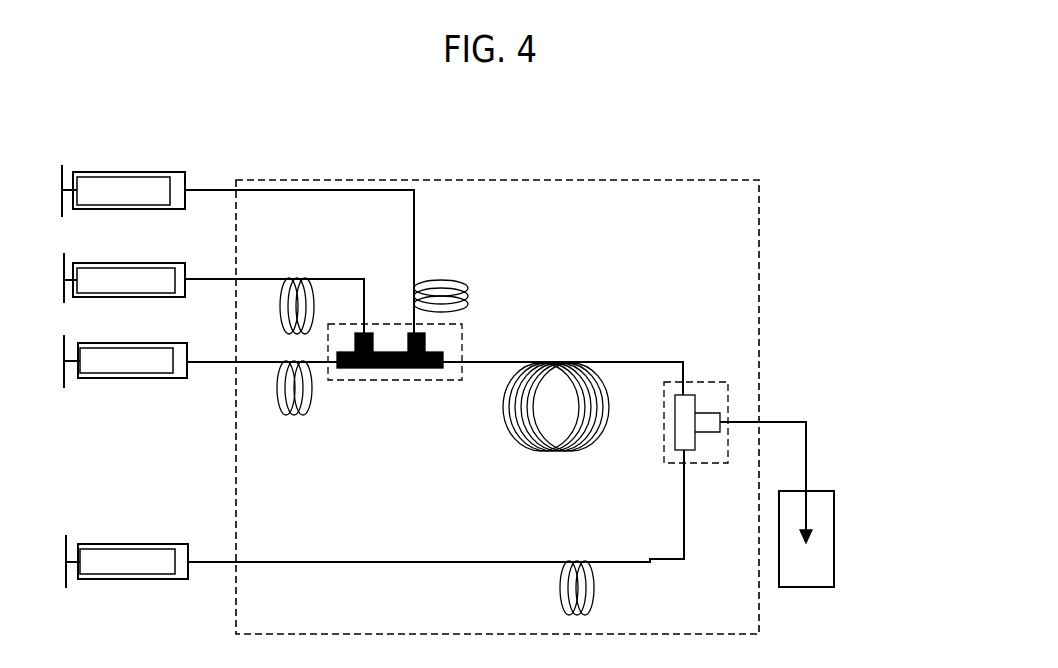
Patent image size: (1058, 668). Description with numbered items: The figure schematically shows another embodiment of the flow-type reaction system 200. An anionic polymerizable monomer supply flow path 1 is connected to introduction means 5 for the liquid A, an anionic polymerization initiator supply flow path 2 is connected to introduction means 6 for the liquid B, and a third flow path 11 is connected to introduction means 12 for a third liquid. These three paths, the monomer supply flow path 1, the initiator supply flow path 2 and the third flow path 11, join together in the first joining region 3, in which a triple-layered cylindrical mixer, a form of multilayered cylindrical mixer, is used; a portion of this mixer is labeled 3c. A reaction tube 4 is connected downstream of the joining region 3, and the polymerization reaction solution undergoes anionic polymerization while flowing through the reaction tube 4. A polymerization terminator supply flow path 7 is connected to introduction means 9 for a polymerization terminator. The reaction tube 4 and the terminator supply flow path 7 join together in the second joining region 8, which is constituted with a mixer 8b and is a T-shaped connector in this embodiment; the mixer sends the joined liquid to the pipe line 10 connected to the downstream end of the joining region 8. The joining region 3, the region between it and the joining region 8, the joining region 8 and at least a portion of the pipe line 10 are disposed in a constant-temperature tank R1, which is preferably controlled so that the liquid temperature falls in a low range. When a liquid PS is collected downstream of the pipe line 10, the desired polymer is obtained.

The flow-type reaction system 200 is at (592, 362).
The constant-temperature tank R1 is at (759, 242).
The introduction means for a third liquid 12 is at (120, 188).
The third flow path 11 is at (275, 192).
The introduction means for the liquid A 5 is at (127, 273).
The anionic polymerizable monomer supply flow path 1 is at (240, 278).
The introduction means for the liquid B 6 is at (115, 365).
The anionic polymerization initiator supply flow path 2 is at (233, 362).
The joining region 3 is at (395, 386).
The valve port 3c is at (407, 370).
The reaction tube 4 is at (507, 360).
The joining region 8 is at (730, 386).
The mixer 8b is at (697, 398).
The pipe line 10 is at (807, 433).
The liquid PS is at (820, 560).
The polymerization terminator supply flow path 7 is at (223, 563).
The introduction means for a polymerization terminator 9 is at (117, 567).